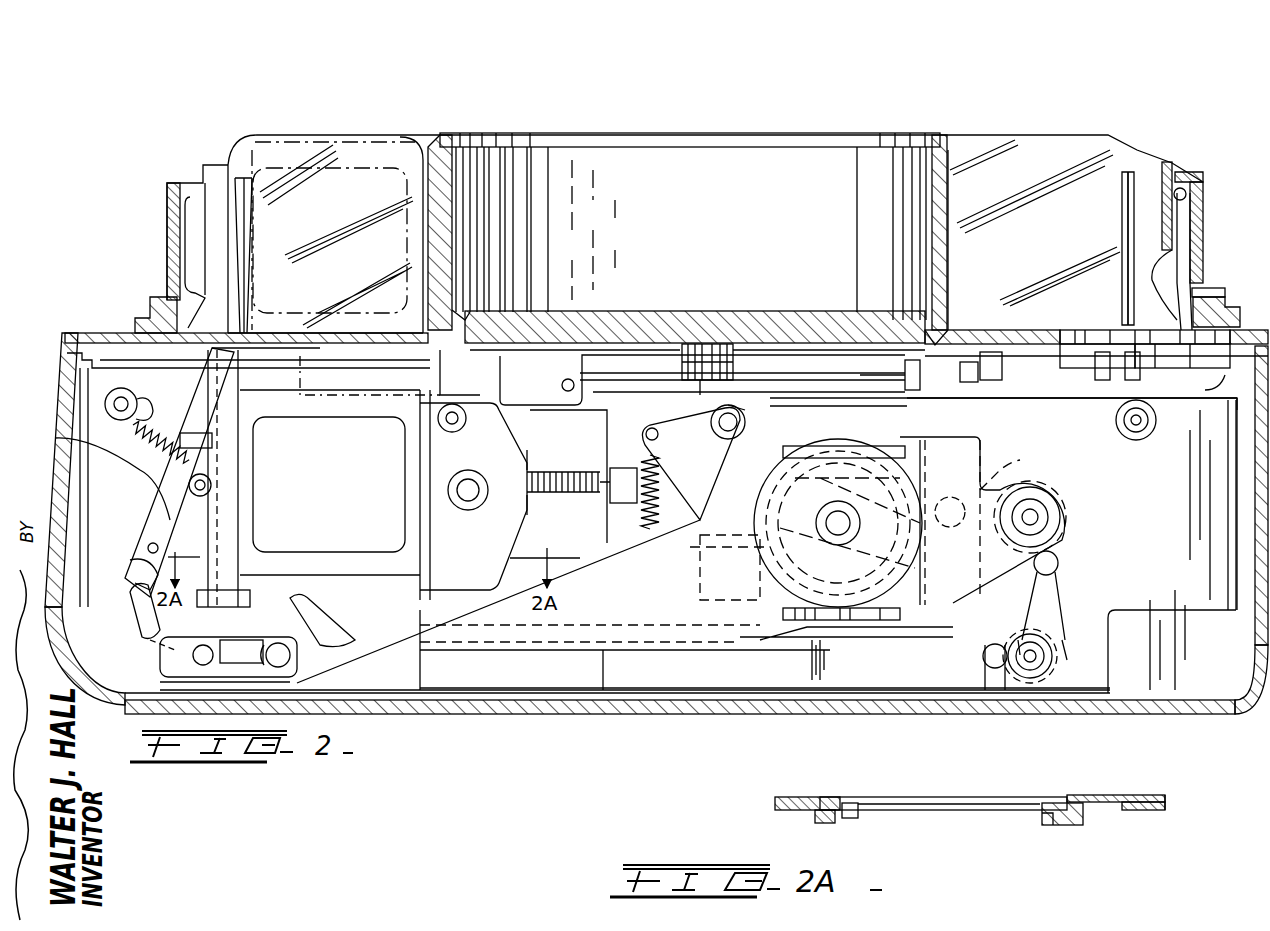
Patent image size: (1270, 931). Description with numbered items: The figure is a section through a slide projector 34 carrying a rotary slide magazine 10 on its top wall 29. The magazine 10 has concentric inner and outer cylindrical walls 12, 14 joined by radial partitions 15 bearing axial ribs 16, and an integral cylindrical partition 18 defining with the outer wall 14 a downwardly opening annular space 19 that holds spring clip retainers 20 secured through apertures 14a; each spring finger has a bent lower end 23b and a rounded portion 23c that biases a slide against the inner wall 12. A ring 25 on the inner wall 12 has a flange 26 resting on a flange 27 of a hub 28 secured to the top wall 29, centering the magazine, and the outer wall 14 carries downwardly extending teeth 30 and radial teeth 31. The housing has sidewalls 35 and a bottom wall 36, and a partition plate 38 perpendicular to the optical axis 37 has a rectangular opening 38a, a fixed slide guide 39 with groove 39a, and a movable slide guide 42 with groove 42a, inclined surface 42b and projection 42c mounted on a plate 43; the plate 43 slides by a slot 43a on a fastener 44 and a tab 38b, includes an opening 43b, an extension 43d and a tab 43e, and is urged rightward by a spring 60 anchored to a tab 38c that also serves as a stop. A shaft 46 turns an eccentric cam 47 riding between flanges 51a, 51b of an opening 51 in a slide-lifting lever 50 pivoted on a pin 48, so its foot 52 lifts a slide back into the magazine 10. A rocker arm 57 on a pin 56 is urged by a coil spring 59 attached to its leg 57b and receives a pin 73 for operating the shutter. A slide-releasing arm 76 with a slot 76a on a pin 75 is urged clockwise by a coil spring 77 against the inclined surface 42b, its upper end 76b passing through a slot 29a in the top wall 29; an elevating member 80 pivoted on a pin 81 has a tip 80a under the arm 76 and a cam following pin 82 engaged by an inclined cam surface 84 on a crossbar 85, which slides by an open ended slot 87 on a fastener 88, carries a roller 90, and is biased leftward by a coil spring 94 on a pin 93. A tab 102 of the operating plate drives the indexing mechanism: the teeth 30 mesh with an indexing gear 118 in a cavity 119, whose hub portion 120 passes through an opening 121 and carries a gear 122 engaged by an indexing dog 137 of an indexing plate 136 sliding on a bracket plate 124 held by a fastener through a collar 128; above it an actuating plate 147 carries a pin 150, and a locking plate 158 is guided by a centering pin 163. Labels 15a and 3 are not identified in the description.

In FIG. 2, the slide magazine 10 is at (515, 128).
In FIG. 2, the inner cylindrical wall 12 is at (936, 235).
In FIG. 2, the outer cylindrical wall 14 is at (1205, 253).
In FIG. 2, the apertures 14a is at (1205, 290).
In FIG. 2, the partition 15 is at (1045, 133).
In FIG. 2, the cover corner 15a is at (235, 150).
In FIG. 2, the rib 16 is at (1122, 222).
In FIG. 2, the cylindrical partition 18 is at (1165, 226).
In FIG. 2, the annular space 19 is at (1190, 236).
In FIG. 2, the spring clip retainer 20 is at (1190, 205).
In FIG. 2, the lower end of spring finger 23b is at (184, 280).
In FIG. 2, the rounded portion 23c is at (248, 285).
In FIG. 2, the ring 25 is at (925, 300).
In FIG. 2, the flange 26 is at (466, 325).
In FIG. 2, the flange 27 is at (940, 335).
In FIG. 2, the hub member 28 is at (752, 312).
In FIG. 2, the top wall 29 is at (487, 372).
In FIG. 2, the slot 29a is at (300, 345).
In FIG. 2, the block 3 is at (1240, 312).
In FIG. 2, the teeth 30 is at (135, 333).
In FIG. 2, the teeth 31 is at (140, 305).
In FIG. 2, the slide projector 34 is at (570, 725).
In FIG. 2, the sidewall 35 is at (65, 480).
In FIG. 2, the bottom wall 36 is at (820, 712).
In FIG. 2, the optical axis 37 is at (328, 487).
In FIG. 2, the partition plate 38 is at (1068, 504).
In FIG. 2A, the partition plate 38 is at (1080, 797).
In FIG. 2A, the rectangular opening 38a is at (958, 798).
In FIG. 2, the tab 38b is at (765, 666).
In FIG. 2, the tab 38c is at (610, 475).
In FIG. 2, the slide guide 39 is at (420, 530).
In FIG. 2A, the slide guide 39 is at (1070, 815).
In FIG. 2A, the groove 39a is at (1042, 815).
In FIG. 2, the slide guide 42 is at (228, 460).
In FIG. 2A, the slide guide 42 is at (815, 820).
In FIG. 2A, the groove 42a is at (860, 818).
In FIG. 2, the inclined surface 42b is at (205, 392).
In FIG. 2, the projection 42c is at (212, 510).
In FIG. 2, the plate 43 is at (513, 496).
In FIG. 2A, the plate 43 is at (1155, 810).
In FIG. 2, the slot 43a is at (140, 442).
In FIG. 2, the rectangular opening 43b is at (500, 435).
In FIG. 2A, the rectangular opening 43b is at (935, 808).
In FIG. 2, the extension 43d is at (712, 606).
In FIG. 2, the tab 43e is at (512, 520).
In FIG. 2, the fastener 44 is at (112, 406).
In FIG. 2, the shaft 46 is at (838, 515).
In FIG. 2, the cam 47 is at (925, 645).
In FIG. 2, the pin 48 is at (1040, 517).
In FIG. 2, the slide-lifting lever 50 is at (592, 560).
In FIG. 2, the rectangular opening 51 is at (912, 470).
In FIG. 2, the flange 51a is at (912, 450).
In FIG. 2, the flange 51b is at (862, 622).
In FIG. 2, the foot 52 is at (340, 354).
In FIG. 2, the pin 56 is at (722, 425).
In FIG. 2, the rocker arm 57 is at (691, 464).
In FIG. 2, the leg 57b is at (670, 428).
In FIG. 2, the coil spring 59 is at (646, 530).
In FIG. 2, the spring 60 is at (548, 482).
In FIG. 2, the pin 73 is at (714, 547).
In FIG. 2, the pin 75 is at (148, 548).
In FIG. 2, the slide-releasing arm 76 is at (175, 520).
In FIG. 2, the slot 76a is at (135, 578).
In FIG. 2, the upper end 76b is at (266, 354).
In FIG. 2, the coil spring 77 is at (99, 472).
In FIG. 2, the elevating member 80 is at (142, 630).
In FIG. 2, the tip 80a is at (165, 640).
In FIG. 2, the pin 81 is at (270, 640).
In FIG. 2, the cam following pin 82 is at (266, 655).
In FIG. 2, the inclined cam surface 84 is at (142, 641).
In FIG. 2, the crossbar 85 is at (496, 650).
In FIG. 2, the open ended slot 87 is at (990, 662).
In FIG. 2, the fastener 88 is at (1040, 656).
In FIG. 2, the roller 90 is at (988, 490).
In FIG. 2, the pin 93 is at (1058, 563).
In FIG. 2, the coil spring 94 is at (1066, 590).
In FIG. 2, the tab 102 is at (752, 410).
In FIG. 2, the indexing gear 118 is at (1100, 328).
In FIG. 2, the cavity 119 is at (1062, 335).
In FIG. 2, the hub portion 120 is at (1103, 382).
In FIG. 2, the central opening 121 is at (1140, 380).
In FIG. 2, the gear 122 is at (1085, 400).
In FIG. 2, the bracket plate 124 is at (1228, 385).
In FIG. 2, the hub 128 is at (710, 380).
In FIG. 2, the indexing plate 136 is at (908, 373).
In FIG. 2, the indexing dog 137 is at (1005, 366).
In FIG. 2, the actuating plate 147 is at (785, 404).
In FIG. 2, the pin 150 is at (560, 385).
In FIG. 2, the locking plate 158 is at (780, 360).
In FIG. 2, the centering pin 163 is at (978, 382).